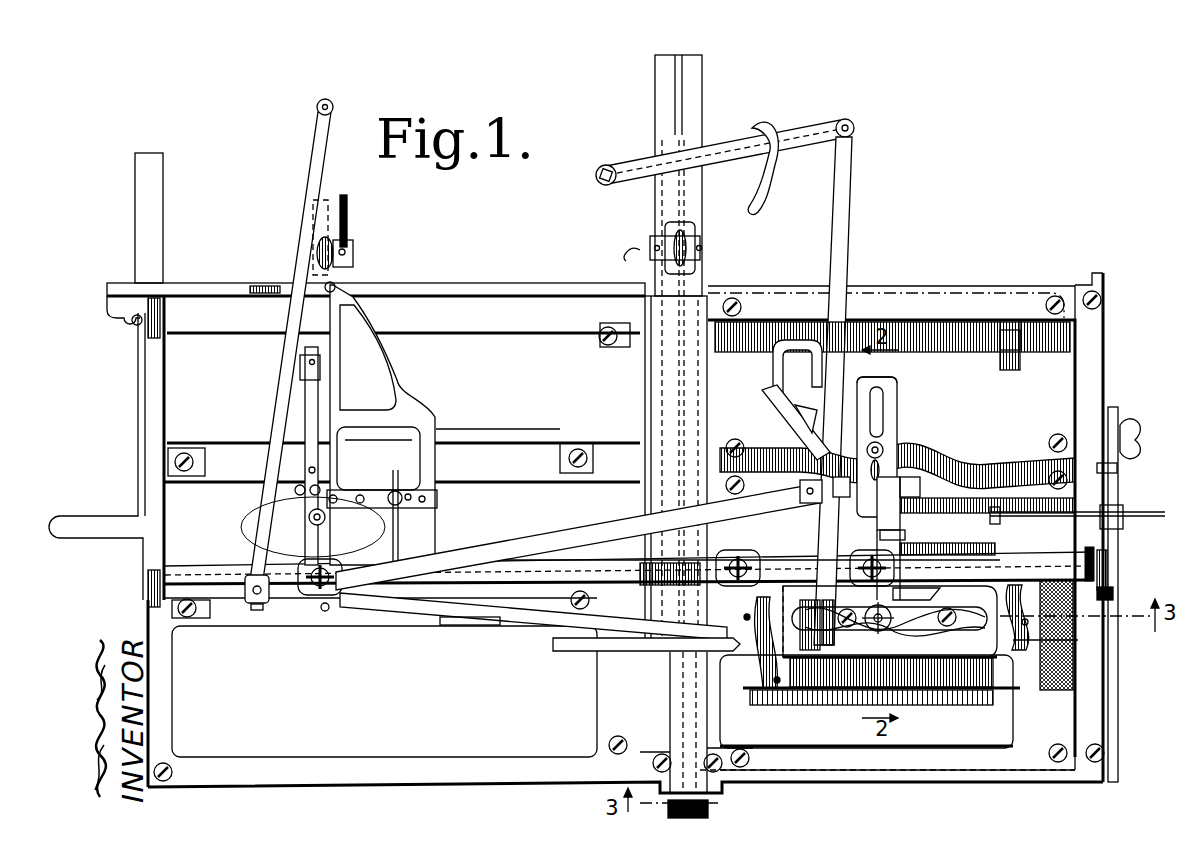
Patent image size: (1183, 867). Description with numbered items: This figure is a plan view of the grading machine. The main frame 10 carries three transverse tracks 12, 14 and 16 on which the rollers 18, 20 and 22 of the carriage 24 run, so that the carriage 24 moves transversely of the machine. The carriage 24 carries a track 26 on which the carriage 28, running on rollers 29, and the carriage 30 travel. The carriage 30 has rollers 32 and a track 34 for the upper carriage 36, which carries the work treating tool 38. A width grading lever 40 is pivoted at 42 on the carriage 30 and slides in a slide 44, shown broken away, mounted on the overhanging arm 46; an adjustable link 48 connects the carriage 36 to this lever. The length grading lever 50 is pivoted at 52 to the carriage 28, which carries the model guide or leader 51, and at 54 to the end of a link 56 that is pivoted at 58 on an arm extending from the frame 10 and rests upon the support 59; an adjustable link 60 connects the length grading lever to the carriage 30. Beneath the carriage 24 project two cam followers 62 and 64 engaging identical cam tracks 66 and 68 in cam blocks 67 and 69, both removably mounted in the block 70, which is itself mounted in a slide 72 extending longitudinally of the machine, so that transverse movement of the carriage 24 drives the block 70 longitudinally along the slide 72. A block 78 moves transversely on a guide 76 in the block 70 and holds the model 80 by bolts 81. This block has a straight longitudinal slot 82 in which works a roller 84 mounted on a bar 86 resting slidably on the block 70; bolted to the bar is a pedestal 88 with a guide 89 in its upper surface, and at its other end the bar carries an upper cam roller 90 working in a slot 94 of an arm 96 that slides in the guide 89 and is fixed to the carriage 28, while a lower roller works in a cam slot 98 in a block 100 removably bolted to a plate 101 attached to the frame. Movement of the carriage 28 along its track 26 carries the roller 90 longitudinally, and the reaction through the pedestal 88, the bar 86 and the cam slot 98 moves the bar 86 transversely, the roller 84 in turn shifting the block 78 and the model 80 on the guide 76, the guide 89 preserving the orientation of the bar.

The main frame 10 is at (910, 760).
The transverse track 12 is at (1097, 713).
The transverse track 14 is at (690, 113).
The transverse track 16 is at (150, 222).
The roller 18 is at (1107, 552).
The roller 20 is at (695, 241).
The roller 22 is at (134, 320).
The carriage 24 is at (680, 340).
The track 26 is at (653, 560).
The carriage 28 is at (820, 557).
The rollers 29 is at (860, 330).
The carriage 30 is at (390, 366).
The rollers 32 is at (313, 590).
The track 34 is at (330, 205).
The upper carriage 36 is at (348, 225).
The work treating tool 38 is at (290, 520).
The width grading lever 40 is at (480, 625).
The pivot 42 is at (322, 597).
The slide 44 is at (657, 645).
The overhanging arm 46 is at (690, 723).
The adjustable link 48 is at (283, 405).
The length grading lever 50 is at (850, 187).
The model guide 51 is at (960, 490).
The pivot 52 is at (790, 445).
The pivot 54 is at (855, 128).
The link 56 is at (805, 128).
The pivot 58 is at (600, 180).
The support 59 is at (770, 173).
The adjustable link 60 is at (457, 552).
The cam roll 62 is at (755, 565).
The cam roll 64 is at (1090, 485).
The cam track 66 is at (775, 690).
The cam block 67 is at (752, 672).
The cam track 68 is at (1017, 692).
The cam block 69 is at (1030, 685).
The block 70 is at (985, 630).
The slide 72 is at (1085, 595).
The guide 76 is at (830, 713).
The block 78 is at (915, 650).
The model 80 is at (930, 630).
The bolts 81 is at (1080, 642).
The straight slot 82 is at (850, 650).
The roller 84 is at (855, 630).
The bar 86 is at (902, 535).
The pedestal 88 is at (945, 440).
The guide 89 is at (957, 340).
The cam roller 90 is at (895, 460).
The slot 94 is at (883, 405).
The arm 96 is at (880, 385).
The cam slot 98 is at (1040, 450).
The block 100 is at (1027, 445).
The plate 101 is at (1010, 340).